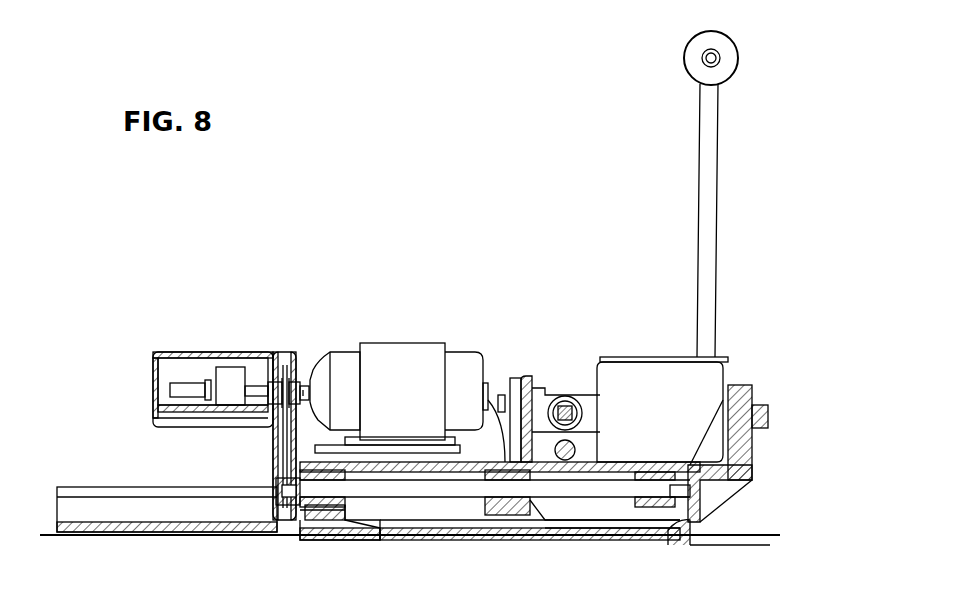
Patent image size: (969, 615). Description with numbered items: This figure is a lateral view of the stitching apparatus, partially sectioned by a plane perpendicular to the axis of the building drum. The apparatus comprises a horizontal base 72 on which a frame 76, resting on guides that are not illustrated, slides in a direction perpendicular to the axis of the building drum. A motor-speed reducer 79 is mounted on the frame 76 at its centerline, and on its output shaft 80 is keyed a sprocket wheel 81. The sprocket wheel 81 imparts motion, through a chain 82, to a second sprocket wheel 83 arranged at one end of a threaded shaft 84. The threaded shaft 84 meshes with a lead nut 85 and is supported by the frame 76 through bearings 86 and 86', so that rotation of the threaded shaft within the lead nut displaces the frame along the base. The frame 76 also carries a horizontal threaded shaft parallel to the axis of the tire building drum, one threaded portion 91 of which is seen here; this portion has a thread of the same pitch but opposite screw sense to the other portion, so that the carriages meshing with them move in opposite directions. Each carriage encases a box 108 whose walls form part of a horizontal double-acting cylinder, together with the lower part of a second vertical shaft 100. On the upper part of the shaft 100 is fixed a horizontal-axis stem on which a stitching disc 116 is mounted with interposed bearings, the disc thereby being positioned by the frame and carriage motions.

The horizontal base 72 is at (95, 535).
The frame 76 is at (470, 464).
The motor-speed reducer 79 is at (414, 352).
The output shaft 80 is at (306, 380).
The sprocket wheel 81 is at (273, 360).
The chain 82 is at (271, 440).
The sprocket wheel 83 is at (286, 526).
The threaded shaft 84 is at (416, 490).
The lead nut 85 is at (503, 515).
The bearing 86 is at (662, 523).
The bearing 86' is at (340, 522).
The portion of horizontal threaded shaft 91 is at (562, 385).
The second vertical shaft 100 is at (718, 193).
The box 108 is at (636, 364).
The stitching disc 116 is at (737, 47).